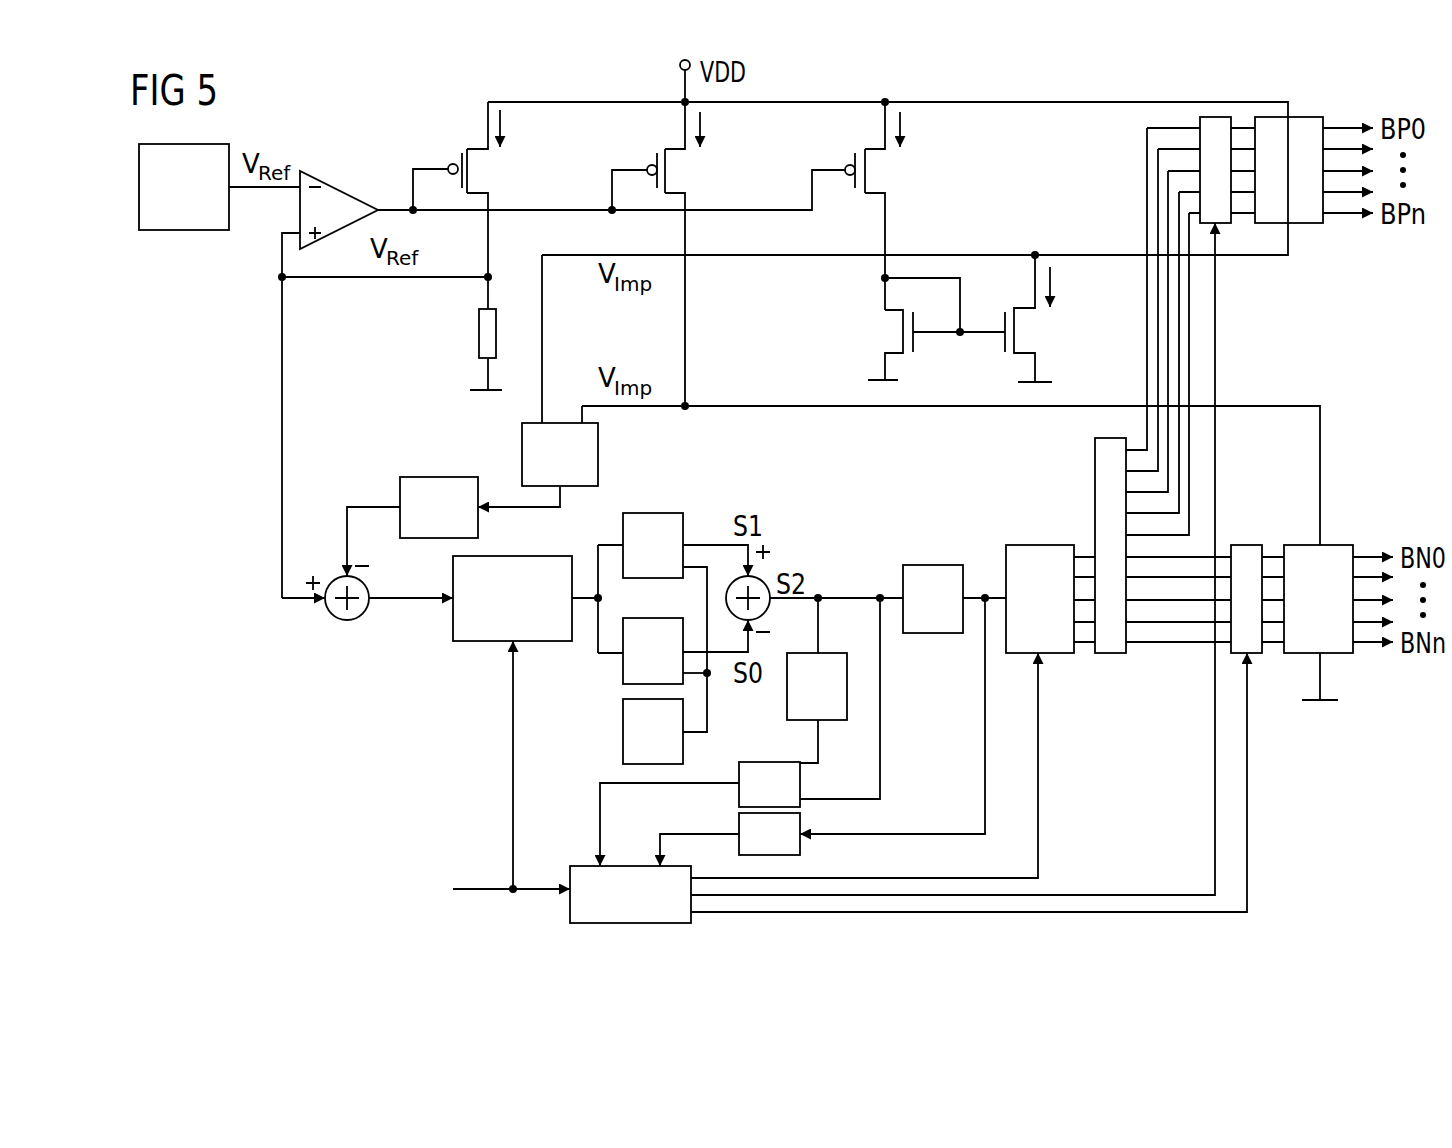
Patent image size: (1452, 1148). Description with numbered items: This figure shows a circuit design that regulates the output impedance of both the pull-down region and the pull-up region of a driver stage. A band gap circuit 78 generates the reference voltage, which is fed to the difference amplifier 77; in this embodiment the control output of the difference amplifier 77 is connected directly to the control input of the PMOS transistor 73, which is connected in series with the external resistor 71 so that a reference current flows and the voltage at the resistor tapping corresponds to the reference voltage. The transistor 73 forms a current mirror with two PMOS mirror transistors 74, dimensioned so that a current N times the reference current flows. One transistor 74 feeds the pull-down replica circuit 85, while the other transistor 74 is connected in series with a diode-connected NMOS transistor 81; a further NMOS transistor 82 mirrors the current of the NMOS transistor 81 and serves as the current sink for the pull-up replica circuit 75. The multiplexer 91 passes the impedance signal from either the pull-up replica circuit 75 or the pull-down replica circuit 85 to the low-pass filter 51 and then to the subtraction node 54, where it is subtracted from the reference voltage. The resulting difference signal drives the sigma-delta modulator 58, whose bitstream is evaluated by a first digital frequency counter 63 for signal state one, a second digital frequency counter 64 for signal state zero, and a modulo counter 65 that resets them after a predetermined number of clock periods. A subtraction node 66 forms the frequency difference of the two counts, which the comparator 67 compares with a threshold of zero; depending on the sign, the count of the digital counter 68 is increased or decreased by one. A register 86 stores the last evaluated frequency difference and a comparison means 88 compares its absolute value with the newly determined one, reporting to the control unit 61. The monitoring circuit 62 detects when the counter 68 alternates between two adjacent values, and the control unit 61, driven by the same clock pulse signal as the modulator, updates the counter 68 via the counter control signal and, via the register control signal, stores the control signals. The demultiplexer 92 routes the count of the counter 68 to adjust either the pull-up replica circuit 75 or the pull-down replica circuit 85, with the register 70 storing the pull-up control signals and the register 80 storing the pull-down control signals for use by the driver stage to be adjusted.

The band gap circuit 78 is at (200, 205).
The difference amplifier 77 is at (337, 187).
The transistor 73 is at (477, 168).
The transistor 74 is at (675, 167).
The external resistor 71 is at (477, 333).
The NMOS transistor 81 is at (895, 333).
The NMOS transistor 82 is at (1027, 333).
The register 70 is at (1223, 225).
The replica circuit 75 is at (1304, 185).
The multiplexer 91 is at (575, 472).
The low-pass filter 51 is at (454, 524).
The subtraction node 54 is at (347, 620).
The sigma-delta modulator 58 is at (527, 615).
The first digital frequency counter 63 is at (668, 564).
The second digital frequency counter 64 is at (668, 669).
The modulo counter 65 is at (668, 749).
The subtraction node 66 is at (760, 580).
The comparator 67 is at (935, 565).
The register 86 is at (830, 720).
The comparison means 88 is at (783, 799).
The monitoring circuit 62 is at (783, 849).
The control unit 61 is at (645, 912).
The digital counter 68 is at (1055, 617).
The demultiplexer 92 is at (1108, 655).
The register 80 is at (1250, 542).
The replica circuit 85 is at (1333, 617).